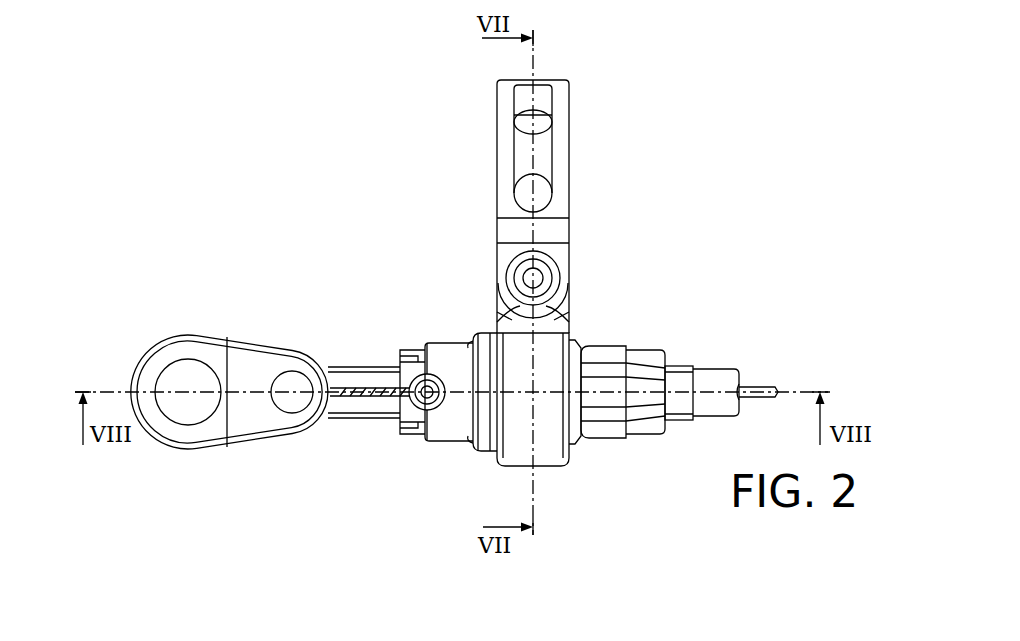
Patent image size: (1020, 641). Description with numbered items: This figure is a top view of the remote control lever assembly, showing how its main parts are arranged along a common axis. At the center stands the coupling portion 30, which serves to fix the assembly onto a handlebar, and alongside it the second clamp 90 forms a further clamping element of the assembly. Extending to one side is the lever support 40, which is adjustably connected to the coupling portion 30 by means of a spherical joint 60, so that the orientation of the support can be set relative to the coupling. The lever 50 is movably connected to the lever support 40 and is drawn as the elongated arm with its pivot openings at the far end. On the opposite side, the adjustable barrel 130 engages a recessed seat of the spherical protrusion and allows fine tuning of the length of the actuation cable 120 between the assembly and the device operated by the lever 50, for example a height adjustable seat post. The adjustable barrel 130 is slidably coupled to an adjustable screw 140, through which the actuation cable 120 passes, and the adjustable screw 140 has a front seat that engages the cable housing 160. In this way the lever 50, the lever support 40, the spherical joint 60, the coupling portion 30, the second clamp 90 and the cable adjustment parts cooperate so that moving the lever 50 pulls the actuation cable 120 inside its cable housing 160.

The coupling portion 30 is at (572, 155).
The lever support 40 is at (416, 325).
The lever 50 is at (244, 325).
The spherical joint 60 is at (485, 457).
The second clamp 90 is at (540, 437).
The actuation cable 120 is at (775, 388).
The adjustable barrel 130 is at (630, 355).
The adjustable screw 140 is at (680, 385).
The cable housing 160 is at (711, 405).